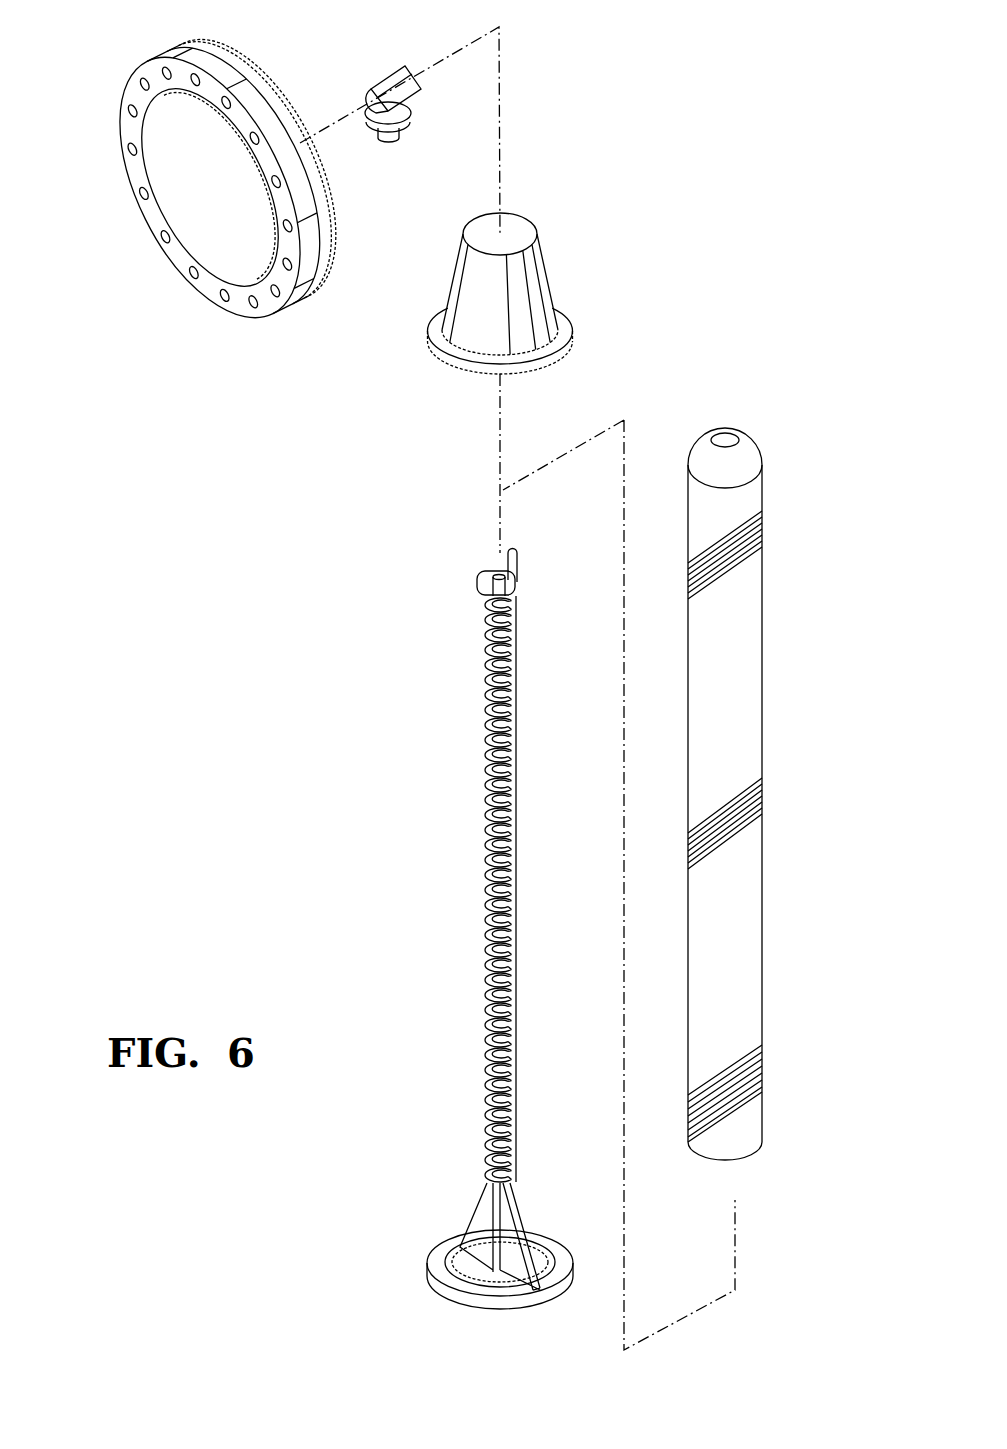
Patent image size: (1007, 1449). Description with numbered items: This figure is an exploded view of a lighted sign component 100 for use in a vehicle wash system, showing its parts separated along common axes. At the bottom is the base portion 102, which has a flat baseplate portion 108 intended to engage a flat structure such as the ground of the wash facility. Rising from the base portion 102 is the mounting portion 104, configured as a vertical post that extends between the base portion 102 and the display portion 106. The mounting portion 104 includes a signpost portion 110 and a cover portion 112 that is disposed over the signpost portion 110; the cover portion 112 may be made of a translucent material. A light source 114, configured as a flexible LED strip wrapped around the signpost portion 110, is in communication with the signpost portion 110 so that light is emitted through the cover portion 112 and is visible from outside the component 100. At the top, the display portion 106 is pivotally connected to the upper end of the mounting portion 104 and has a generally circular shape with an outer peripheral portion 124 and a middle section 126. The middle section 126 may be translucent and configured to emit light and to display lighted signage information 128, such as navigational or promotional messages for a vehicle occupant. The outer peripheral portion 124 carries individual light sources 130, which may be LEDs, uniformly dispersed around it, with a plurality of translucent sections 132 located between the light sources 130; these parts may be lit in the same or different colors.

The lighted sign component 100 is at (768, 163).
The base portion 102 is at (548, 1227).
The mounting portion 104 is at (792, 945).
The display portion 106 is at (482, 157).
The baseplate portion 108 is at (443, 1280).
The signpost portion 110 is at (505, 990).
The cover portion 112 is at (762, 850).
The light source 114 is at (488, 780).
The outer peripheral portion 124 is at (307, 242).
The middle section 126 is at (200, 128).
The signage information 128 is at (257, 282).
The light sources 130 is at (217, 293).
The sections 132 is at (127, 123).